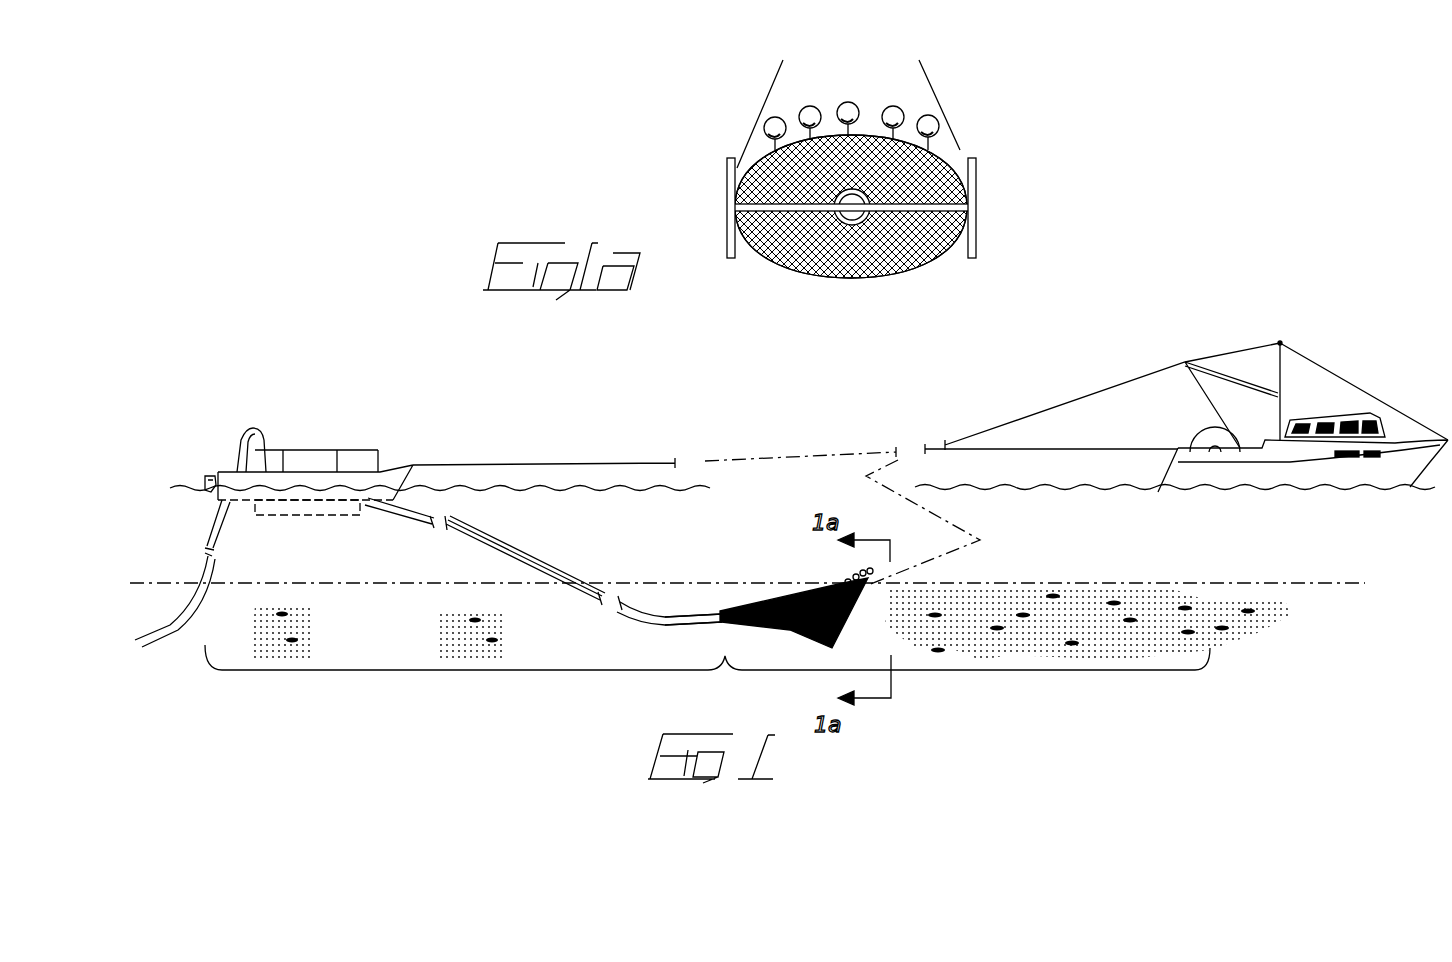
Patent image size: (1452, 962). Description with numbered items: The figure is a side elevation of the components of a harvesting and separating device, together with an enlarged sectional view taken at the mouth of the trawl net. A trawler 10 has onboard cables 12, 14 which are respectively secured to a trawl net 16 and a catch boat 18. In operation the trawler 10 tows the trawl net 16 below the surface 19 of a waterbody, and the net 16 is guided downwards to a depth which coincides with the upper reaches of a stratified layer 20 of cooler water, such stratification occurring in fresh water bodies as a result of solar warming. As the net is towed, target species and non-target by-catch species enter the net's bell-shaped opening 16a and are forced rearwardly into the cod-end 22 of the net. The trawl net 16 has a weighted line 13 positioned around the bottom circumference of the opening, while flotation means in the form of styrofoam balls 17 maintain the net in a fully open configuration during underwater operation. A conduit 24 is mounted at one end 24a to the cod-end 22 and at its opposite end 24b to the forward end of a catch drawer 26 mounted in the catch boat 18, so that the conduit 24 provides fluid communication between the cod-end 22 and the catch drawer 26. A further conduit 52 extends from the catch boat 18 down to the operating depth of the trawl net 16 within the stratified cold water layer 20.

In FIG. 1, the trawler 10 is at (1345, 415).
In FIG. 1A, the cable 12 is at (925, 82).
In FIG. 1, the cable 12 is at (1055, 402).
In FIG. 1A, the weighted line 13 is at (775, 277).
In FIG. 1, the cable 14 is at (585, 463).
In FIG. 1A, the trawl net 16 is at (915, 250).
In FIG. 1, the trawl net 16 is at (796, 598).
In FIG. 1, the bell-shaped opening 16a is at (852, 622).
In FIG. 1A, the styrofoam balls 17 is at (808, 108).
In FIG. 1, the catch boat 18 is at (392, 478).
In FIG. 1, the surface 19 is at (195, 487).
In FIG. 1, the stratified layer 20 is at (1178, 602).
In FIG. 1A, the cod-end 22 is at (845, 222).
In FIG. 1, the cod-end 22 is at (727, 622).
In FIG. 1, the conduit 24 is at (585, 598).
In FIG. 1, the end 24a is at (690, 615).
In FIG. 1, the end 24b is at (384, 518).
In FIG. 1, the catch drawer 26 is at (303, 512).
In FIG. 1, the conduit 52 is at (210, 565).